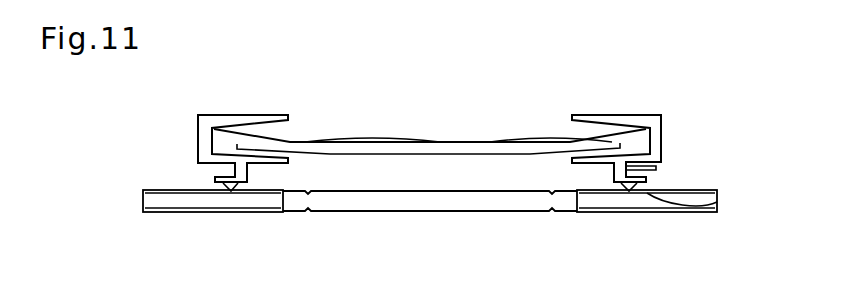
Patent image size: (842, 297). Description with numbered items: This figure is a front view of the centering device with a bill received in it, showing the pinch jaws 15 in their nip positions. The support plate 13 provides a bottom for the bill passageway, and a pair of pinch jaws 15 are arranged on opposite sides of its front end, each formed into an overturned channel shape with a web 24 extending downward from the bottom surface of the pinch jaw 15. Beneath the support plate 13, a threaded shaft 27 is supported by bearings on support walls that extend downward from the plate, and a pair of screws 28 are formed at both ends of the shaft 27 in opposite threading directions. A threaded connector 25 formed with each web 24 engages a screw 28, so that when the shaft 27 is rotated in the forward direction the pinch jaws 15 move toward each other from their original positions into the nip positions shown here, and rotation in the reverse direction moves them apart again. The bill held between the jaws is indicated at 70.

The support plate 13 is at (463, 147).
The pinch jaw 15 is at (231, 117).
The web 24 is at (656, 168).
The threaded connector 25 is at (717, 196).
The threaded shaft 27 is at (424, 206).
The screw 28 is at (222, 213).
The coating layer 70 is at (528, 138).